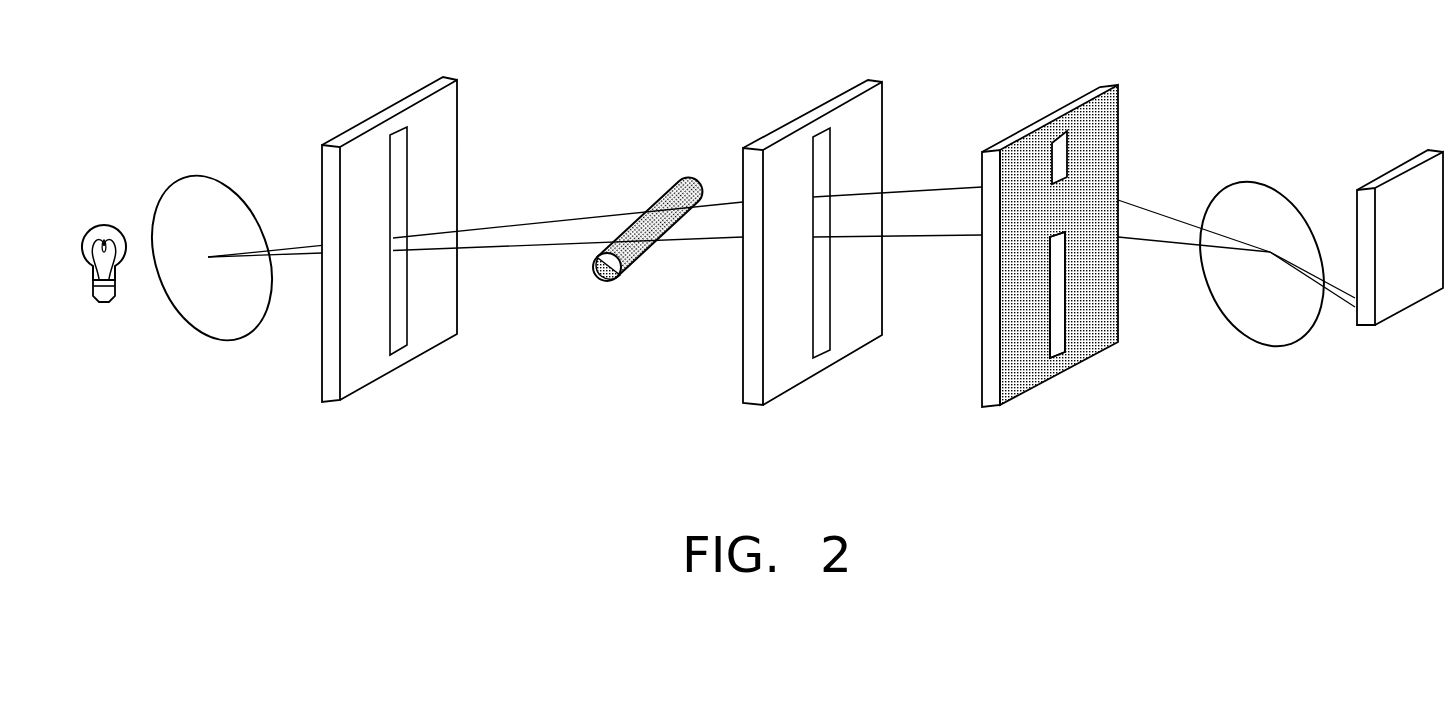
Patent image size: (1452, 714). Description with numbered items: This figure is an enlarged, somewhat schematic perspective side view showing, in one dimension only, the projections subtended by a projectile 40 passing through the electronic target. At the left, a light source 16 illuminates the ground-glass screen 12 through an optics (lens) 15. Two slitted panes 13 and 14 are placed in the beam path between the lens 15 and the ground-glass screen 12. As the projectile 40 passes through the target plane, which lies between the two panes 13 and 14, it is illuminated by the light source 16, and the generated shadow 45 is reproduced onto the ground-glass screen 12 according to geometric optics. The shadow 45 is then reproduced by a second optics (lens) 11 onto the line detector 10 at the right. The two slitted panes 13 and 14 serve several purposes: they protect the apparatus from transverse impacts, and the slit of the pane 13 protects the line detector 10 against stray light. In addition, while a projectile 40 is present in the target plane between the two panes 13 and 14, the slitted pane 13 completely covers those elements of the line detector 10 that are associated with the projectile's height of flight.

The line detector 10 is at (1372, 177).
The optics (lens) 11 is at (1270, 185).
The ground-glass screen 12 is at (985, 150).
The slitted pane 13 is at (745, 148).
The slitted pane 14 is at (322, 145).
The optics (lens) 15 is at (227, 177).
The light source 16 is at (103, 228).
The projectile 40 is at (607, 281).
The shadow 45 is at (1062, 208).